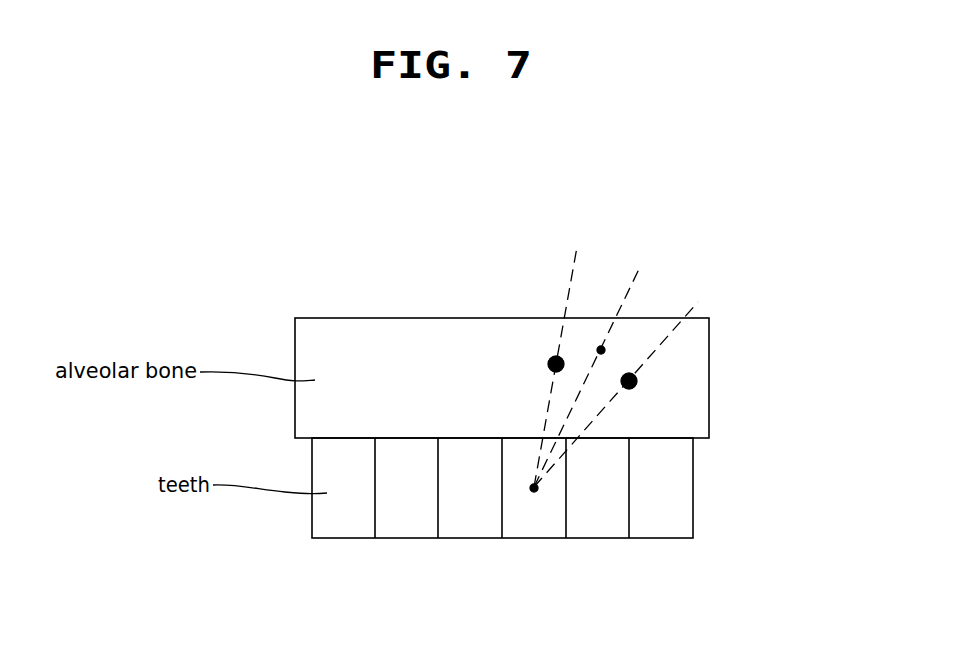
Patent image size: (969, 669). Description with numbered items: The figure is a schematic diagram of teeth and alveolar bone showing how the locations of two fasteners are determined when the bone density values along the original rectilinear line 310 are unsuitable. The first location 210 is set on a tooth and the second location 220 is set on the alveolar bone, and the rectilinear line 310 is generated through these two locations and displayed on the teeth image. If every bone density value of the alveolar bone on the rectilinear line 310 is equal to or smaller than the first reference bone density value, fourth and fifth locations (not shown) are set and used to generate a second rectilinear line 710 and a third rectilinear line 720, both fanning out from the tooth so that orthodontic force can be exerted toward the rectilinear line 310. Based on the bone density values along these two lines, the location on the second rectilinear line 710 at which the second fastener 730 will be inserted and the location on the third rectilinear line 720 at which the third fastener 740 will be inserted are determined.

The first location 210 is at (535, 492).
The second location 220 is at (601, 345).
The rectilinear line 310 is at (640, 272).
The second rectilinear line 710 is at (574, 269).
The third rectilinear line 720 is at (698, 305).
The second fastener 730 is at (548, 364).
The third fastener 740 is at (637, 381).